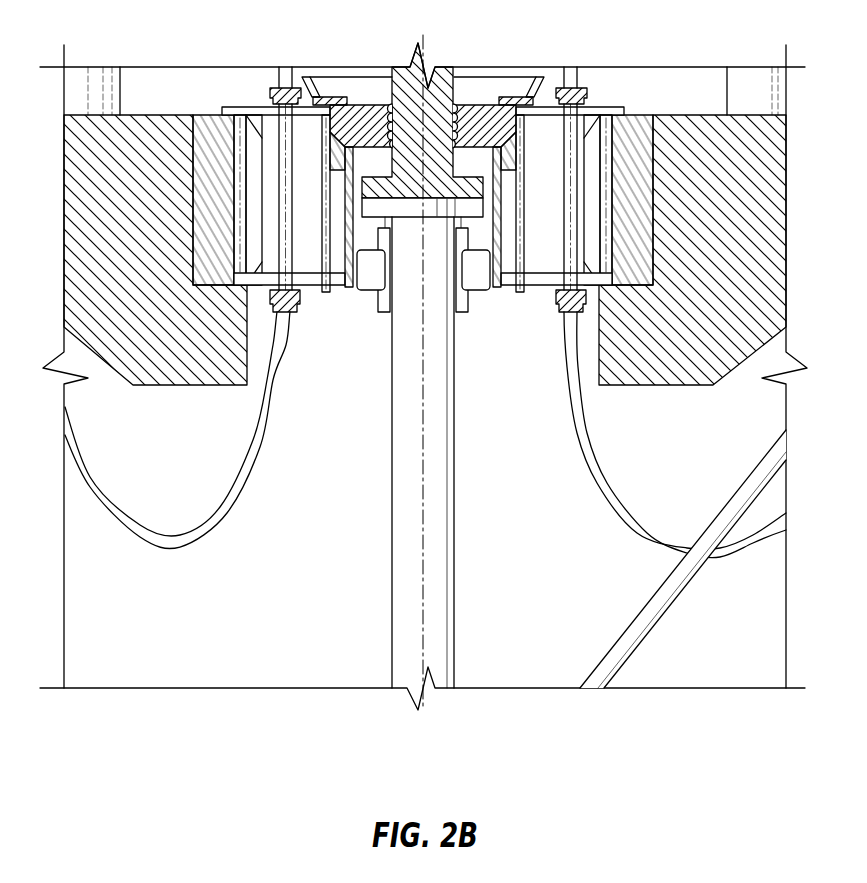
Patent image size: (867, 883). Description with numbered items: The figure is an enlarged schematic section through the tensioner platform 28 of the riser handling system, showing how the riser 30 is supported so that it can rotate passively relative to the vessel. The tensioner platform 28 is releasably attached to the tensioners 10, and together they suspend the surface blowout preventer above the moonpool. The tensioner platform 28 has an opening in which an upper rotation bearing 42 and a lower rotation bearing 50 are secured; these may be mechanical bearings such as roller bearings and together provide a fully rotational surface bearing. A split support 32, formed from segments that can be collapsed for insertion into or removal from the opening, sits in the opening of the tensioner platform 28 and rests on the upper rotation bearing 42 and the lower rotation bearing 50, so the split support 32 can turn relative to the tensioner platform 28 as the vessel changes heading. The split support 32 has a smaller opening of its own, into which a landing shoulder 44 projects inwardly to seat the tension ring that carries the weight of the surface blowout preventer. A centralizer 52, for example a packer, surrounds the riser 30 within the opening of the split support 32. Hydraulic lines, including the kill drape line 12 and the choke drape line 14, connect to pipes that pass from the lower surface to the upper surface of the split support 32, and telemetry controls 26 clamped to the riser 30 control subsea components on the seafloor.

The tensioners 10 is at (727, 103).
The kill drape line 12 is at (262, 462).
The choke drape line 14 is at (598, 482).
The telemetry controls 26 is at (652, 610).
The tensioner platform 28 is at (678, 385).
The riser 30 is at (395, 488).
The split support 32 is at (543, 254).
The upper rotation bearing 42 is at (255, 130).
The landing shoulder 44 is at (333, 157).
The lower rotation bearing 50 is at (252, 287).
The centralizer 52 is at (370, 287).